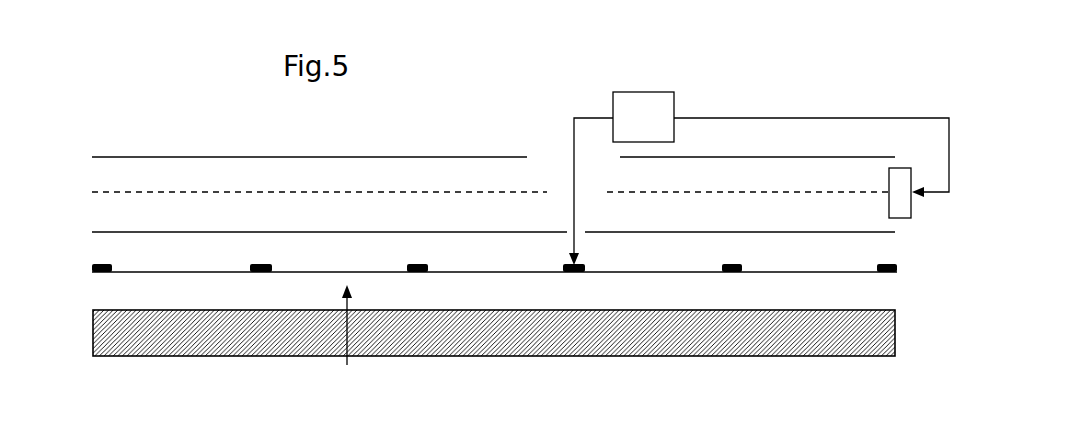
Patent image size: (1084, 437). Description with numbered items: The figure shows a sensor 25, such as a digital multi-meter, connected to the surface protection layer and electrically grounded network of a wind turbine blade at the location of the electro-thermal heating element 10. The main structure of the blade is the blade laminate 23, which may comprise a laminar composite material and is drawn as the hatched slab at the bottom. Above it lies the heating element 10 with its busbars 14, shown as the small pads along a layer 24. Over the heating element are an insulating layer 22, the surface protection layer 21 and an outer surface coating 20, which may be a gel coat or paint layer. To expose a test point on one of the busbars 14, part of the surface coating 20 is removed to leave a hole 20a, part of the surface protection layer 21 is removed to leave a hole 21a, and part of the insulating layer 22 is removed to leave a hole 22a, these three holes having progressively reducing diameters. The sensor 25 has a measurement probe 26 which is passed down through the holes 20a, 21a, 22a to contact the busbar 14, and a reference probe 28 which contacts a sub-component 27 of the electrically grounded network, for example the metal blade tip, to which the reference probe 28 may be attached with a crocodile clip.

The electro-thermal heating element 10 is at (345, 343).
The busbar 14 is at (563, 265).
The surface coating 20 is at (160, 157).
The hole 20a is at (552, 160).
The surface protection layer 21 is at (105, 190).
The hole 21a is at (563, 193).
The insulating layer 22 is at (115, 231).
The hole 22a is at (579, 229).
The blade laminate 23 is at (110, 313).
The carrier layer 24 is at (193, 272).
The sensor 25 is at (630, 103).
The measurement probe 26 is at (574, 241).
The sub-component 27 is at (901, 178).
The reference probe 28 is at (927, 200).